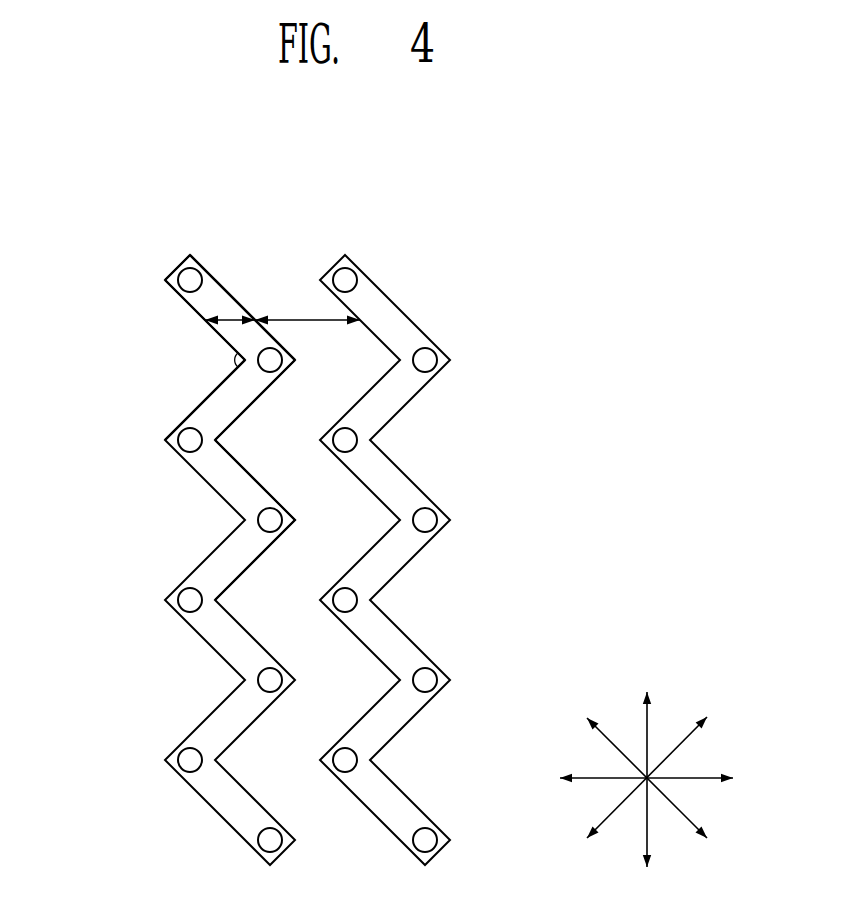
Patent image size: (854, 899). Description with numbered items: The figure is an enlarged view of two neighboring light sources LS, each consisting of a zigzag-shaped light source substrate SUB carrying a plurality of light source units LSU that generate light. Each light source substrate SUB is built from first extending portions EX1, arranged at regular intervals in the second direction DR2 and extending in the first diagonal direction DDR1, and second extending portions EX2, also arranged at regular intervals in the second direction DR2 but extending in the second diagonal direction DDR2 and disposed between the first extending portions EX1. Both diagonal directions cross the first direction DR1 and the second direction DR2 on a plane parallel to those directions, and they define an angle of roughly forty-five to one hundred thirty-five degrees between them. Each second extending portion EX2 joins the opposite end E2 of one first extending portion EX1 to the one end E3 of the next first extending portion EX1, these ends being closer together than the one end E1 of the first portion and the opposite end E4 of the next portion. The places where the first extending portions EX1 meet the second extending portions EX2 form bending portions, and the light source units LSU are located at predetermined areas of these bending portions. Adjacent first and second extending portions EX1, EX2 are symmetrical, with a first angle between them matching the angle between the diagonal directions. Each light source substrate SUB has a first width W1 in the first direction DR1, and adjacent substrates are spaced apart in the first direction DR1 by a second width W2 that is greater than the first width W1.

The light source LS is at (243, 558).
The light source substrate SUB is at (181, 283).
The light source unit LSU is at (168, 281).
The one end of k-th first extending portion E1 is at (191, 251).
The first extending portion EX1 is at (205, 302).
The second extending portion EX2 is at (217, 406).
The opposite end of k-th first extending portion E2 is at (305, 358).
The one end of (k+1)th first extending portion E3 is at (160, 438).
The opposite end of (k+1)th first extending portion E4 is at (305, 519).
The first width W1 is at (232, 318).
The second width W2 is at (309, 318).
The first direction DR1 is at (666, 779).
The second direction DR2 is at (647, 766).
The first diagonal direction DDR1 is at (675, 788).
The second diagonal direction DDR2 is at (675, 769).